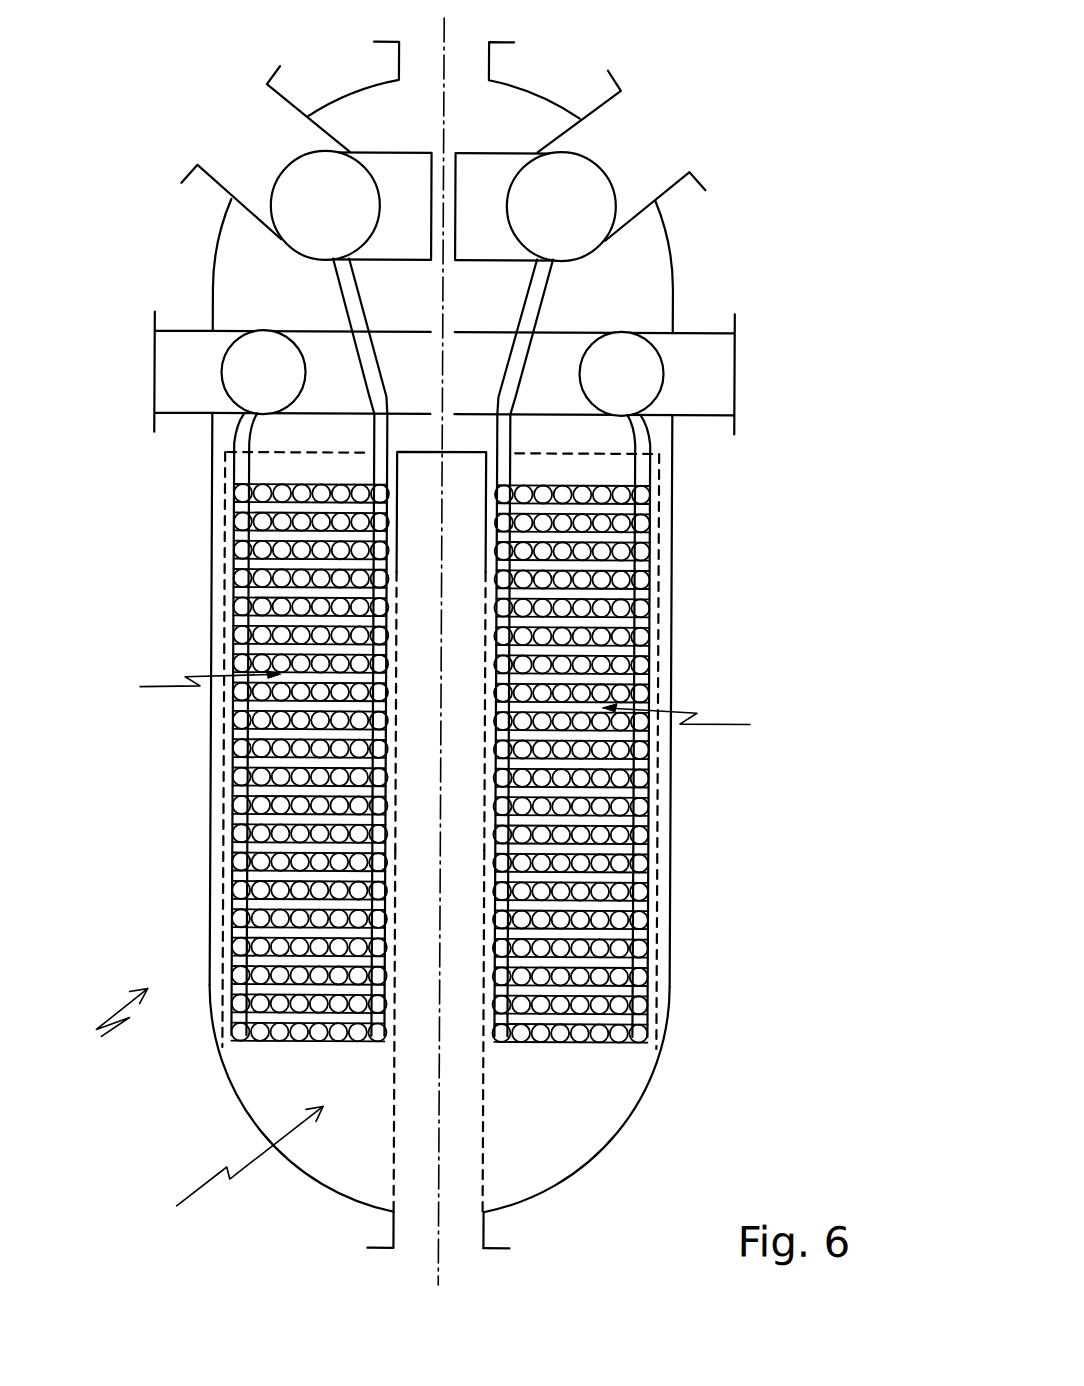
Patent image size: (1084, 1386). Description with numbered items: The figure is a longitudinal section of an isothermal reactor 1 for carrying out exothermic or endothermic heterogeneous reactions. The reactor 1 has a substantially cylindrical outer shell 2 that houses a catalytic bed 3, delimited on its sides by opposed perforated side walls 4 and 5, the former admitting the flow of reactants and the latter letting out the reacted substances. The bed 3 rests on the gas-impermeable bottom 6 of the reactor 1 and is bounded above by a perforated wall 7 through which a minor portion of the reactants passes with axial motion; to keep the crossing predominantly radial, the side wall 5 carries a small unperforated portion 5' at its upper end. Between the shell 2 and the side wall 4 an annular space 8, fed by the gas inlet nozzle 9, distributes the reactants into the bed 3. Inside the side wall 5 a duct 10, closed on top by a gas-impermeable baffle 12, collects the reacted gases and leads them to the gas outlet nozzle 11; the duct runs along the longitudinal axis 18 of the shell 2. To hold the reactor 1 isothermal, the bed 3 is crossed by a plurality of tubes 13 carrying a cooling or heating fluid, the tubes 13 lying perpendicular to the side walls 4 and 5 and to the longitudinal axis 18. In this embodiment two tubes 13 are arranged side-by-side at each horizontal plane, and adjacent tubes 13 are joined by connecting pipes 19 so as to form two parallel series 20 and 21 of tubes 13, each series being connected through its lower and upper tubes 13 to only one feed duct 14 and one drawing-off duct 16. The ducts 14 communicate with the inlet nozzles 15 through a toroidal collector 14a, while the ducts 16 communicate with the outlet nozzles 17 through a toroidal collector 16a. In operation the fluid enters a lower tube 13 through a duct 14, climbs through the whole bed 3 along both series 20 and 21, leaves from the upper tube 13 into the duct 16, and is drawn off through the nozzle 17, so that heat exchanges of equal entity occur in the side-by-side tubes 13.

The isothermal reactor 1 is at (103, 1030).
The outer shell 2 is at (675, 622).
The catalytic bed 3 is at (239, 1167).
The perforated side wall 4 is at (663, 511).
The perforated side wall 5 is at (439, 1031).
The unperforated portion 5' is at (440, 687).
The bottom 6 is at (595, 1166).
The perforated wall 7 is at (268, 457).
The annular space 8 is at (221, 527).
The gas inlet nozzle 9 is at (488, 58).
The duct 10 is at (457, 985).
The gas outlet nozzle 11 is at (488, 1226).
The baffle 12 is at (410, 453).
The tubes 13 is at (264, 562).
The duct 14 is at (346, 299).
The toroidal collector 14a is at (478, 183).
The inlet nozzles 15 is at (210, 190).
The duct 16 is at (251, 440).
The toroidal collector 16a is at (469, 360).
The outlet nozzles 17 is at (183, 325).
The longitudinal axis 18 is at (440, 1252).
The connecting pipes 19 is at (245, 620).
The series of tubes 20 is at (692, 724).
The series of tubes 21 is at (194, 687).